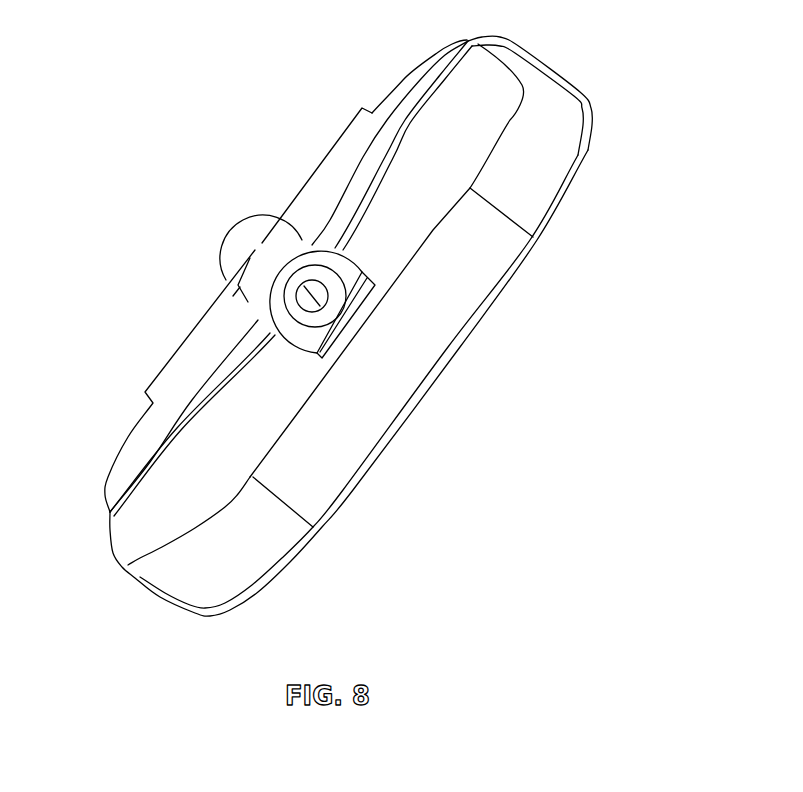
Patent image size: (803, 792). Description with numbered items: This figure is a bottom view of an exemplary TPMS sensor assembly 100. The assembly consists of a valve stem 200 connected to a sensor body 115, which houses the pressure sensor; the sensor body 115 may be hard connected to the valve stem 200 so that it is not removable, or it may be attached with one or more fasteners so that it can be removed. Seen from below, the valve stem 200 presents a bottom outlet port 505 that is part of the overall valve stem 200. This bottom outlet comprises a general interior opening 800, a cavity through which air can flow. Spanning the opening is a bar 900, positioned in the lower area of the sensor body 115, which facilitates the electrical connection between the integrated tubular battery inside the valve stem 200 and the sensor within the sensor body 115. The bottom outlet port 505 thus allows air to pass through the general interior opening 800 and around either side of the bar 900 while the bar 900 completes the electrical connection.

The TPMS sensor assembly 100 is at (378, 326).
The sensor body 115 is at (558, 100).
The valve stem 200 is at (225, 283).
The bottom outlet port 505 is at (300, 312).
The general interior opening 800 is at (272, 228).
The bar 900 is at (302, 275).